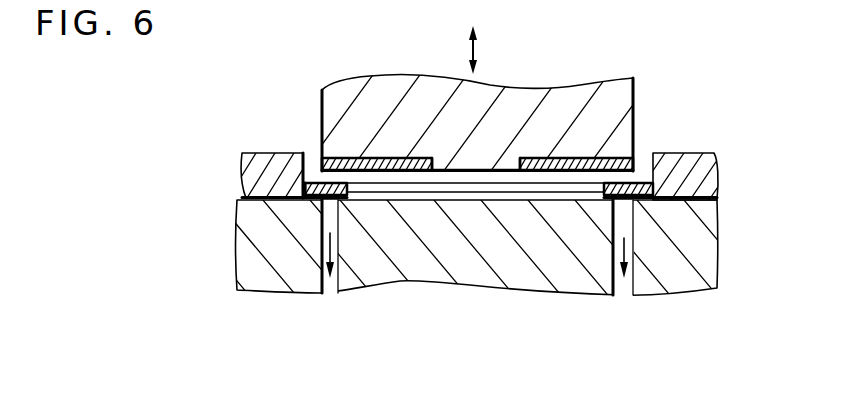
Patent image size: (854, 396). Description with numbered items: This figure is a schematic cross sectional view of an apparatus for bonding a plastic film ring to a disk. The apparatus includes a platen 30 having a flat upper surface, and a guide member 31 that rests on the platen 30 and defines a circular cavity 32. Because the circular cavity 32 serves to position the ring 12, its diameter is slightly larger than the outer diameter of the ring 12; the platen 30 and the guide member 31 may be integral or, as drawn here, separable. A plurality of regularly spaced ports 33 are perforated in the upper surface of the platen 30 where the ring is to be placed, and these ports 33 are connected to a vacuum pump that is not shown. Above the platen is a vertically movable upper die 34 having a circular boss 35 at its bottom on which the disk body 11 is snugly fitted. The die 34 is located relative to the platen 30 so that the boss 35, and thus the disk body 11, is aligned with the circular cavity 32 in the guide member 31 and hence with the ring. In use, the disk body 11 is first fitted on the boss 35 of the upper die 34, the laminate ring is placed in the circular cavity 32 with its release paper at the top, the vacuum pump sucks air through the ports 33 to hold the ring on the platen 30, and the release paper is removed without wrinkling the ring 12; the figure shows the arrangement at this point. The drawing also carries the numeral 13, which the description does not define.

The disk body 11 is at (388, 158).
The plastic ring 12 is at (318, 201).
The stopper block 13 is at (252, 186).
The platen 30 is at (526, 258).
The guide member 31 is at (692, 179).
The circular cavity 32 is at (306, 183).
The ports 33 is at (630, 247).
The upper die 34 is at (538, 100).
The circular boss 35 is at (460, 174).